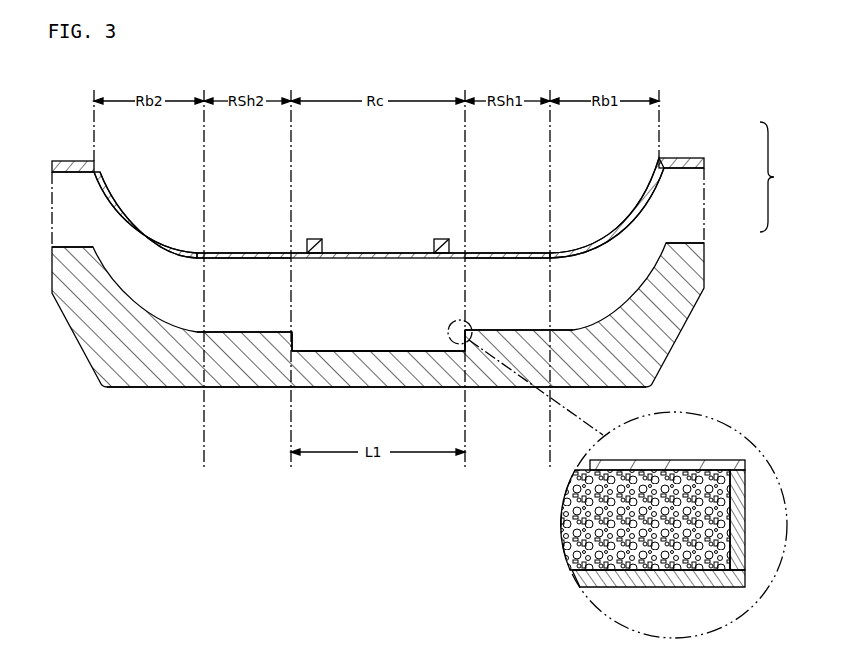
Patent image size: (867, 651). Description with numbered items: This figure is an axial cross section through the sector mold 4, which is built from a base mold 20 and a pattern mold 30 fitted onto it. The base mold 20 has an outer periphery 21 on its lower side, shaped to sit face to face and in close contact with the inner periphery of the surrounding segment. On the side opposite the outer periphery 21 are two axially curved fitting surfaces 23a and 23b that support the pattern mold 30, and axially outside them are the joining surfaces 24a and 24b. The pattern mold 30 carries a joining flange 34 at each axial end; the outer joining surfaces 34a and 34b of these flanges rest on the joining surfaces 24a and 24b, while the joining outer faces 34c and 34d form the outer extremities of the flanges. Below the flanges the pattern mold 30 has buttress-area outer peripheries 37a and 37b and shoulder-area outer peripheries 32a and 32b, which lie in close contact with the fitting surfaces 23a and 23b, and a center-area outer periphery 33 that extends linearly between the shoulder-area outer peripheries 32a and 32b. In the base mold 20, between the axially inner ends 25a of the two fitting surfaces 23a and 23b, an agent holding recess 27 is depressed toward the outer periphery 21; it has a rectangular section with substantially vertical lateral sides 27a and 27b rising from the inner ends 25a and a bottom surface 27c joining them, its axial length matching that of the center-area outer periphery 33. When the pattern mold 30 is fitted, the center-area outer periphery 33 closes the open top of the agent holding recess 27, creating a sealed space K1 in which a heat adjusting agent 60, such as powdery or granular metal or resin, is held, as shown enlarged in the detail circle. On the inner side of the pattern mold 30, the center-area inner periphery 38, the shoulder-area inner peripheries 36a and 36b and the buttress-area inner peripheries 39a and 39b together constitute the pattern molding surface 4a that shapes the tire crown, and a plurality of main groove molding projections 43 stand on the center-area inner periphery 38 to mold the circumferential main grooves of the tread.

The sector mold 4 is at (776, 177).
The pattern molding surface 4a is at (344, 168).
The base mold 20 is at (705, 289).
The outer periphery 21 is at (400, 388).
The fitting surface 23a is at (525, 330).
The fitting surface 23b is at (226, 332).
The joining surface 24a is at (680, 243).
The joining surface 24b is at (92, 246).
The axially inner end 25a is at (291, 332).
The agent holding recess 27 is at (384, 352).
The lateral side 27a is at (452, 338).
The lateral side 27b is at (296, 340).
The bottom surface 27c is at (348, 350).
The pattern mold 30 is at (691, 153).
The shoulder-area outer periphery 32a is at (500, 258).
The shoulder-area outer periphery 32b is at (235, 258).
The center-area outer periphery 33 is at (358, 258).
The joining flange 34 is at (97, 168).
The outer joining surface 34a is at (689, 169).
The outer joining surface 34b is at (53, 173).
The joining outer face 34c is at (670, 158).
The joining outer face 34d is at (90, 161).
The shoulder-area inner periphery 36a is at (486, 252).
The shoulder-area inner periphery 36b is at (240, 252).
The buttress-area outer periphery 37a is at (611, 240).
The buttress-area outer periphery 37b is at (137, 241).
The center-area inner periphery 38 is at (358, 253).
The buttress-area inner periphery 39a is at (601, 238).
The buttress-area inner periphery 39b is at (142, 232).
The main groove molding projection 43 is at (311, 239).
The heat adjusting agent 60 is at (570, 548).
The space K1 is at (740, 488).